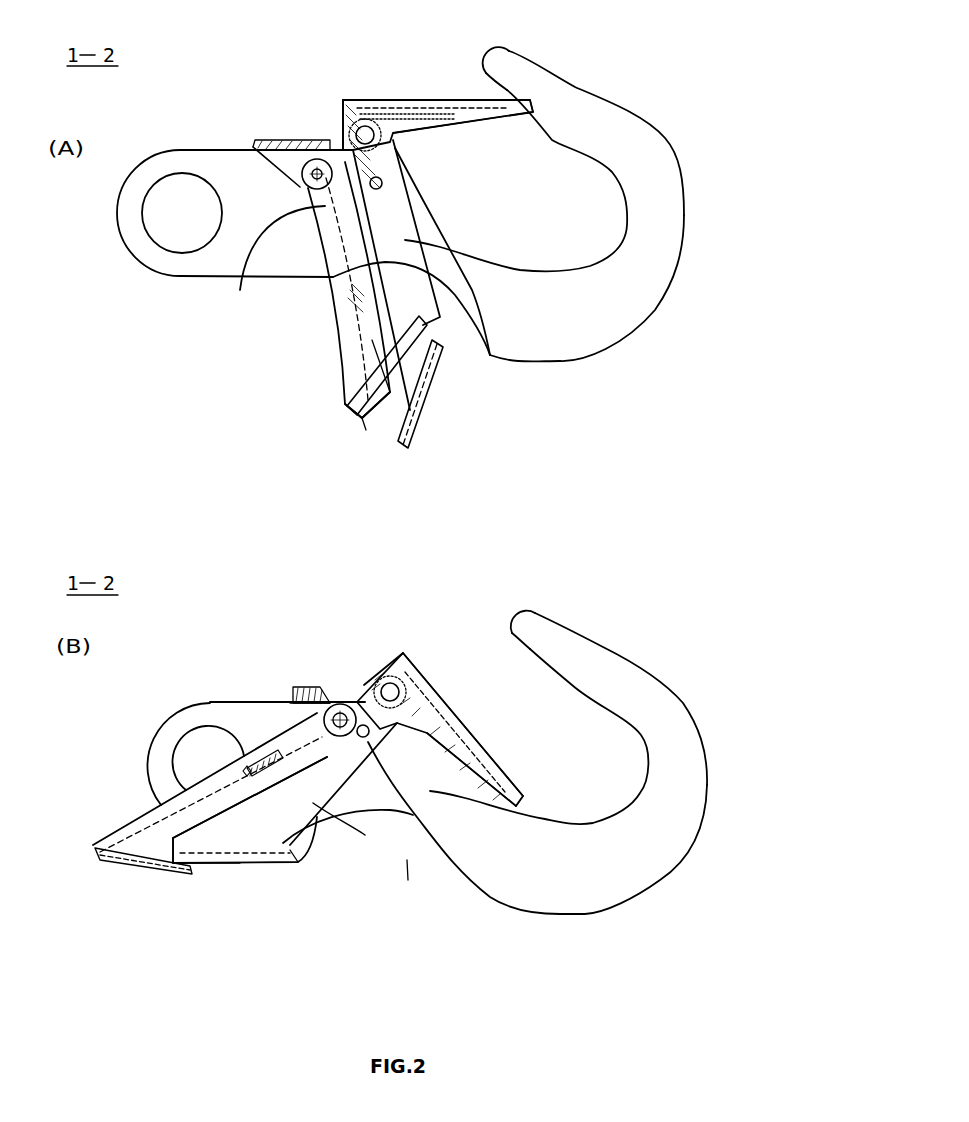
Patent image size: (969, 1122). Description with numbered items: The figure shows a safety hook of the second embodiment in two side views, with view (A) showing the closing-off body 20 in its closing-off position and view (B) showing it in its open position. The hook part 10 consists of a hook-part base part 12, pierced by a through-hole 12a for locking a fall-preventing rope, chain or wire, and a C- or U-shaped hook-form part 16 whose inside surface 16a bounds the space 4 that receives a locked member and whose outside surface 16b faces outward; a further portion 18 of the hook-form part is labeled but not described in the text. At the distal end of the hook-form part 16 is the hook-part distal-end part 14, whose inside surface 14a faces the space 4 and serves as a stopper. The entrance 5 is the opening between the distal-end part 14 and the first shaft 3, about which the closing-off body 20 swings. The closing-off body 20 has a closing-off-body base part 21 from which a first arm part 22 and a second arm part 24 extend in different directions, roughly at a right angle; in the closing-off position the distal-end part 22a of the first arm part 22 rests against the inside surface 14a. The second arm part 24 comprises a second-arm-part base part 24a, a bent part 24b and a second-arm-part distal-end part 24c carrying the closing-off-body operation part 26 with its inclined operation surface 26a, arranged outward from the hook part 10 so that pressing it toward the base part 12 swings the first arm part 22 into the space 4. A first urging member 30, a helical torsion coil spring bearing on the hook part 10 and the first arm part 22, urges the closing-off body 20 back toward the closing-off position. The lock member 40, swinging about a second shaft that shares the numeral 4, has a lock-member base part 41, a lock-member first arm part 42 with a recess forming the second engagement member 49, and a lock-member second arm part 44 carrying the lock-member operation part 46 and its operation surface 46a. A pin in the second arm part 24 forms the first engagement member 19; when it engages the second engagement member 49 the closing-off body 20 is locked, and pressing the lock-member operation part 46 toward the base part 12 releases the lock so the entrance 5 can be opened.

The first shaft 3 is at (400, 143).
The space 4 is at (302, 130).
The entrance 5 is at (442, 84).
The hook part 10 is at (600, 347).
The hook-part base part 12 is at (213, 162).
The through-hole 12a is at (165, 216).
The hook-part distal-end part 14 is at (505, 65).
The inside surface 14a is at (482, 78).
The hook-form part 16 is at (667, 857).
The inside surface 16a is at (625, 222).
The outside surface 16b is at (686, 218).
The hook bottom portion 18 is at (645, 306).
The first engagement member 19 is at (384, 183).
The closing-off body 20 is at (492, 357).
The closing-off-body base part 21 is at (345, 100).
The first arm part 22 is at (495, 120).
The distal-end part 22a is at (530, 116).
The second arm part 24 is at (397, 216).
The second-arm-part base part 24a is at (437, 230).
The bent part 24b is at (405, 258).
The second-arm-part distal-end part 24c is at (363, 376).
The closing-off-body operation part 26 is at (345, 402).
The operation surface 26a is at (363, 430).
The first urging member 30 is at (446, 110).
The lock member 40 is at (247, 285).
The lock-member base part 41 is at (290, 141).
The lock-member first arm part 42 is at (318, 158).
The lock-member second arm part 44 is at (336, 290).
The lock-member operation part 46 is at (413, 444).
The operation surface 46a is at (425, 407).
The second engagement member 49 is at (407, 868).